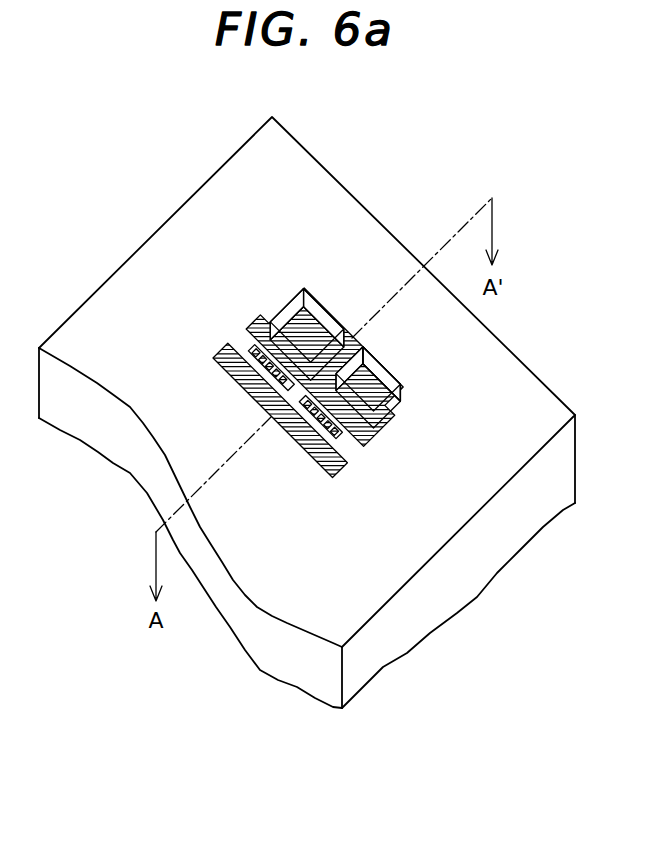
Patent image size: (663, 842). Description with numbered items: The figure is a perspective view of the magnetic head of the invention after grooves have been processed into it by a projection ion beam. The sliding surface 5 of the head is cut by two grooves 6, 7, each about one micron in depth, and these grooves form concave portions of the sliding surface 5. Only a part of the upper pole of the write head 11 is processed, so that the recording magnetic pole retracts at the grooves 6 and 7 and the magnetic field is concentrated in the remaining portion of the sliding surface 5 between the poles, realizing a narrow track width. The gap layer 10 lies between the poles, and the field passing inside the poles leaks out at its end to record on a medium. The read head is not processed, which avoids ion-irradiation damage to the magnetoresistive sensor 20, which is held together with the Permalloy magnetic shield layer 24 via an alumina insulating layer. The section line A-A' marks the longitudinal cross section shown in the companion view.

The sliding surface 5 is at (350, 338).
The groove 6 is at (388, 398).
The groove 7 is at (313, 322).
The gap layer 10 is at (280, 311).
The upper pole of the write head 11 is at (363, 364).
The magnetoresistive sensor 20 is at (290, 393).
The magnetic shield layer 24 is at (334, 475).